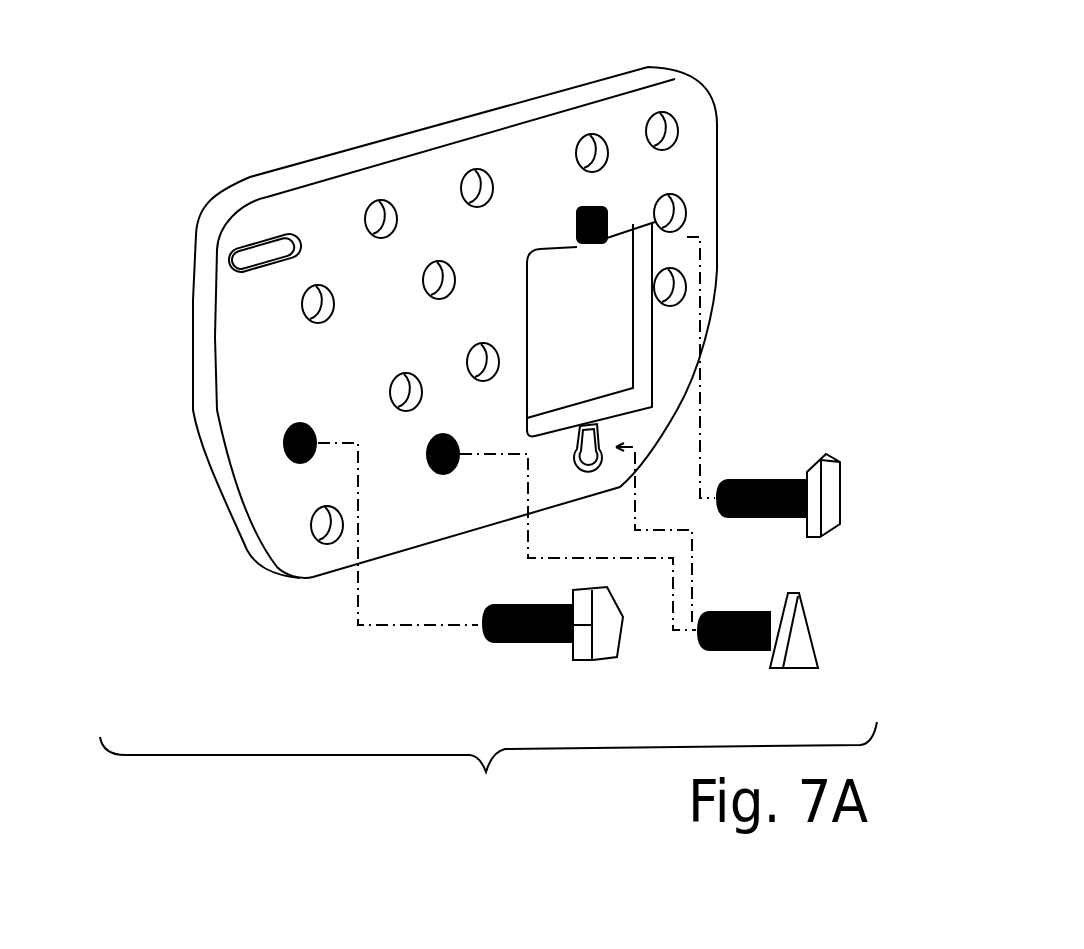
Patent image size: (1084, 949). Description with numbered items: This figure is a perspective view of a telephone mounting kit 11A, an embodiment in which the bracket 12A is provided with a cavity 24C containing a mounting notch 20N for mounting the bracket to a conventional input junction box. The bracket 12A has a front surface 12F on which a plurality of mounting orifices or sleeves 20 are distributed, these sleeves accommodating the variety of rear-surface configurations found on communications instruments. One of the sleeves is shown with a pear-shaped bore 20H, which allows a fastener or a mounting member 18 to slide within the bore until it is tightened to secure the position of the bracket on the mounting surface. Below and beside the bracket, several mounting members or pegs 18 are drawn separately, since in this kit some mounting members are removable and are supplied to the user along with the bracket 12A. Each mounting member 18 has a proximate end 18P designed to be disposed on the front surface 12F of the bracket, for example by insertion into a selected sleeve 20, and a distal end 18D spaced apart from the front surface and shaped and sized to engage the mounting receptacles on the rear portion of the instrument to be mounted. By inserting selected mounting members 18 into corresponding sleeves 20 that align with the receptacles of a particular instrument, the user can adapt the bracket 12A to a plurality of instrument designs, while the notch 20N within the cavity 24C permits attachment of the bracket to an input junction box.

The kit 11A is at (178, 580).
The bracket 12A is at (207, 333).
The front surface 12F is at (466, 328).
The mounting member 18 is at (737, 667).
The proximate end 18P is at (685, 644).
The distal end 18D is at (808, 662).
The mounting orifice or sleeve 20 is at (672, 140).
The mounting notch 20N is at (603, 208).
The bore 20H is at (596, 476).
The cavity 24C is at (612, 335).